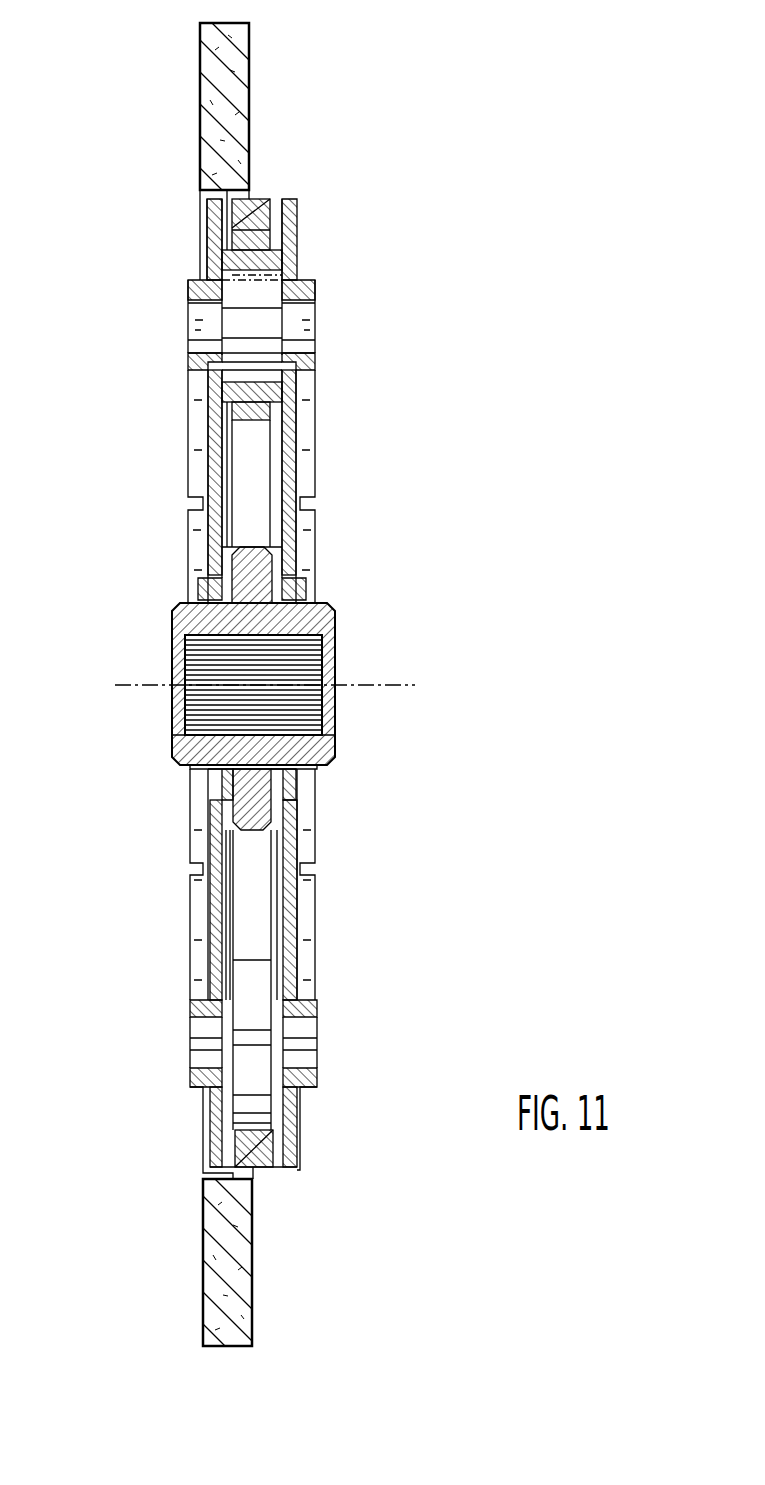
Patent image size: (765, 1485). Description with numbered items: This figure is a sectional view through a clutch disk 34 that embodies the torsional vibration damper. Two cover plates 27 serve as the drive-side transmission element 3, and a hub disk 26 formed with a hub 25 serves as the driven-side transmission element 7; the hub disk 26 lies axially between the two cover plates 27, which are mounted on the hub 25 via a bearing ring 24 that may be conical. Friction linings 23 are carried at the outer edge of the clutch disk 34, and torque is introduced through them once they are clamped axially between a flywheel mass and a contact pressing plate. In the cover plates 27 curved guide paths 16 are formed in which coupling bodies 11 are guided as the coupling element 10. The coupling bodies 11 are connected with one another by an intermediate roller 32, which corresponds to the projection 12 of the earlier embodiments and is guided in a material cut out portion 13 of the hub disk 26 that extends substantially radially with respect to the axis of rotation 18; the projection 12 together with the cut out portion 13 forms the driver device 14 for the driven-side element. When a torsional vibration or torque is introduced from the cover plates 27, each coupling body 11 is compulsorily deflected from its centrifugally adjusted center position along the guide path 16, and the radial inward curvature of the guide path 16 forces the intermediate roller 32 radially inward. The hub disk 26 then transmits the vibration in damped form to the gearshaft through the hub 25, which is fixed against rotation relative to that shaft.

The drive-side transmission element 3 is at (206, 972).
The driven-side transmission element 7 is at (254, 576).
The coupling element 10 is at (180, 358).
The coupling body 11 is at (310, 352).
The projection 12 is at (198, 332).
The material cut out portion 13 is at (243, 478).
The driver device 14 is at (307, 414).
The guide path 16 is at (206, 300).
The axis of rotation 18 is at (143, 688).
The friction linings 23 is at (210, 103).
The bearing ring 24 is at (200, 588).
The hub 25 is at (325, 760).
The hub disk 26 is at (260, 817).
The cover plates 27 is at (212, 916).
The intermediate roller 32 is at (225, 275).
The clutch disk 34 is at (368, 187).